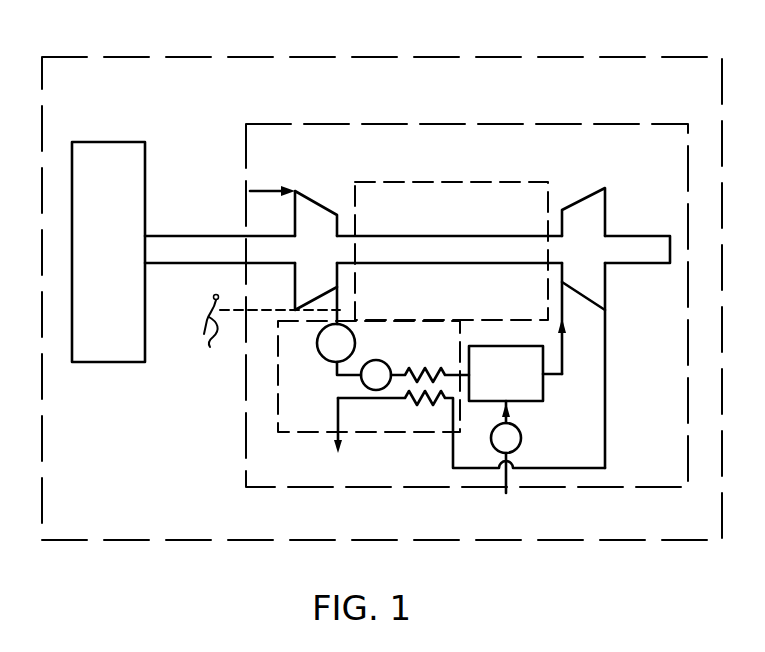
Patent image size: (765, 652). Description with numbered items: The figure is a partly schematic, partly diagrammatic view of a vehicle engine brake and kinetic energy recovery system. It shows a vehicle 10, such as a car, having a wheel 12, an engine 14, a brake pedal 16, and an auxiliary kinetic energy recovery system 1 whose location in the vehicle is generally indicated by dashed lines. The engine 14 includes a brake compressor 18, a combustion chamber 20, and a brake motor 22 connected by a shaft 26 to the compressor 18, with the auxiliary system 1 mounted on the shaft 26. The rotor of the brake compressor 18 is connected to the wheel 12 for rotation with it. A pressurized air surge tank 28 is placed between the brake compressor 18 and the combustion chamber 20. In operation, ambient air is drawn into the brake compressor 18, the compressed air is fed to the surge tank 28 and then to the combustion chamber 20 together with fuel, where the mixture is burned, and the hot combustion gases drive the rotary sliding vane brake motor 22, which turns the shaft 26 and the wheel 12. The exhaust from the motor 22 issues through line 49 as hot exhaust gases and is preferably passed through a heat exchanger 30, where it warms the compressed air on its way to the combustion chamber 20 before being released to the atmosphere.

The auxiliary kinetic energy recovery system 1 is at (480, 182).
The vehicle 10 is at (562, 57).
The wheel 12 is at (100, 140).
The engine 14 is at (428, 124).
The brake pedal 16 is at (262, 330).
The brake compressor 18 is at (317, 205).
The combustion chamber 20 is at (537, 402).
The brake motor 22 is at (603, 212).
The shaft 26 is at (483, 235).
The pressurized air surge tank 28 is at (322, 362).
The heat exchanger 30 is at (428, 369).
The line 49 is at (607, 447).